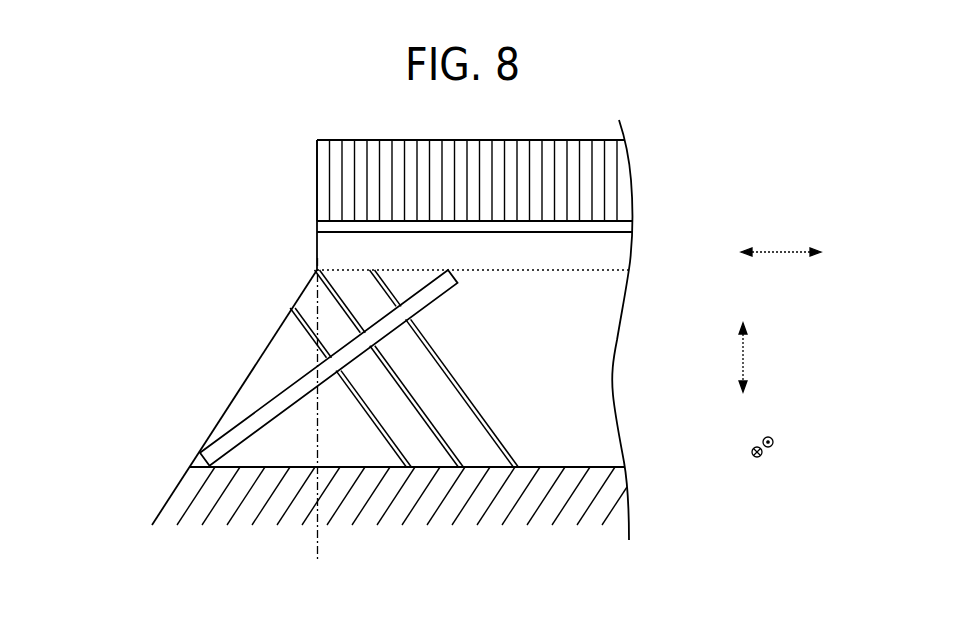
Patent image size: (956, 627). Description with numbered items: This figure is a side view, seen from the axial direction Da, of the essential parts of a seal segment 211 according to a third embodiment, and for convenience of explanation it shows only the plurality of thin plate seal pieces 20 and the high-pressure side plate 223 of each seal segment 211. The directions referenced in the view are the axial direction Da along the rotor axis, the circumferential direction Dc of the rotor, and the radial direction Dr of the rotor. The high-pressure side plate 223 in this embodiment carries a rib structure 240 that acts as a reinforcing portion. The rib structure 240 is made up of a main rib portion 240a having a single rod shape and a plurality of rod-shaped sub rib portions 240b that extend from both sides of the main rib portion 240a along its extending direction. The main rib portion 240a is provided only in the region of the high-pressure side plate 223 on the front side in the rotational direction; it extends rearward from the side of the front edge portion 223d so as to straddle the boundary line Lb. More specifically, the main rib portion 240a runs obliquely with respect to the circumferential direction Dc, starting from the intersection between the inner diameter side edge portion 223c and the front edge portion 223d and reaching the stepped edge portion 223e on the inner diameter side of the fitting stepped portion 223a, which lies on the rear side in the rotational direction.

The seal segment 211 is at (731, 140).
The thin plate seal pieces 20 is at (620, 184).
The high-pressure side plate 223 is at (590, 374).
The fitting stepped portion 223a is at (615, 251).
The inner diameter side edge portion 223c is at (593, 467).
The front edge portion 223d is at (270, 344).
The stepped edge portion 223e is at (587, 272).
The rib structure 240 is at (283, 368).
The main rib portion 240a is at (257, 410).
The sub rib portions 240b is at (314, 337).
The boundary line Lb is at (323, 425).
The circumferential direction Dc is at (781, 236).
The radial direction Dr is at (762, 357).
The axial direction Da is at (782, 446).